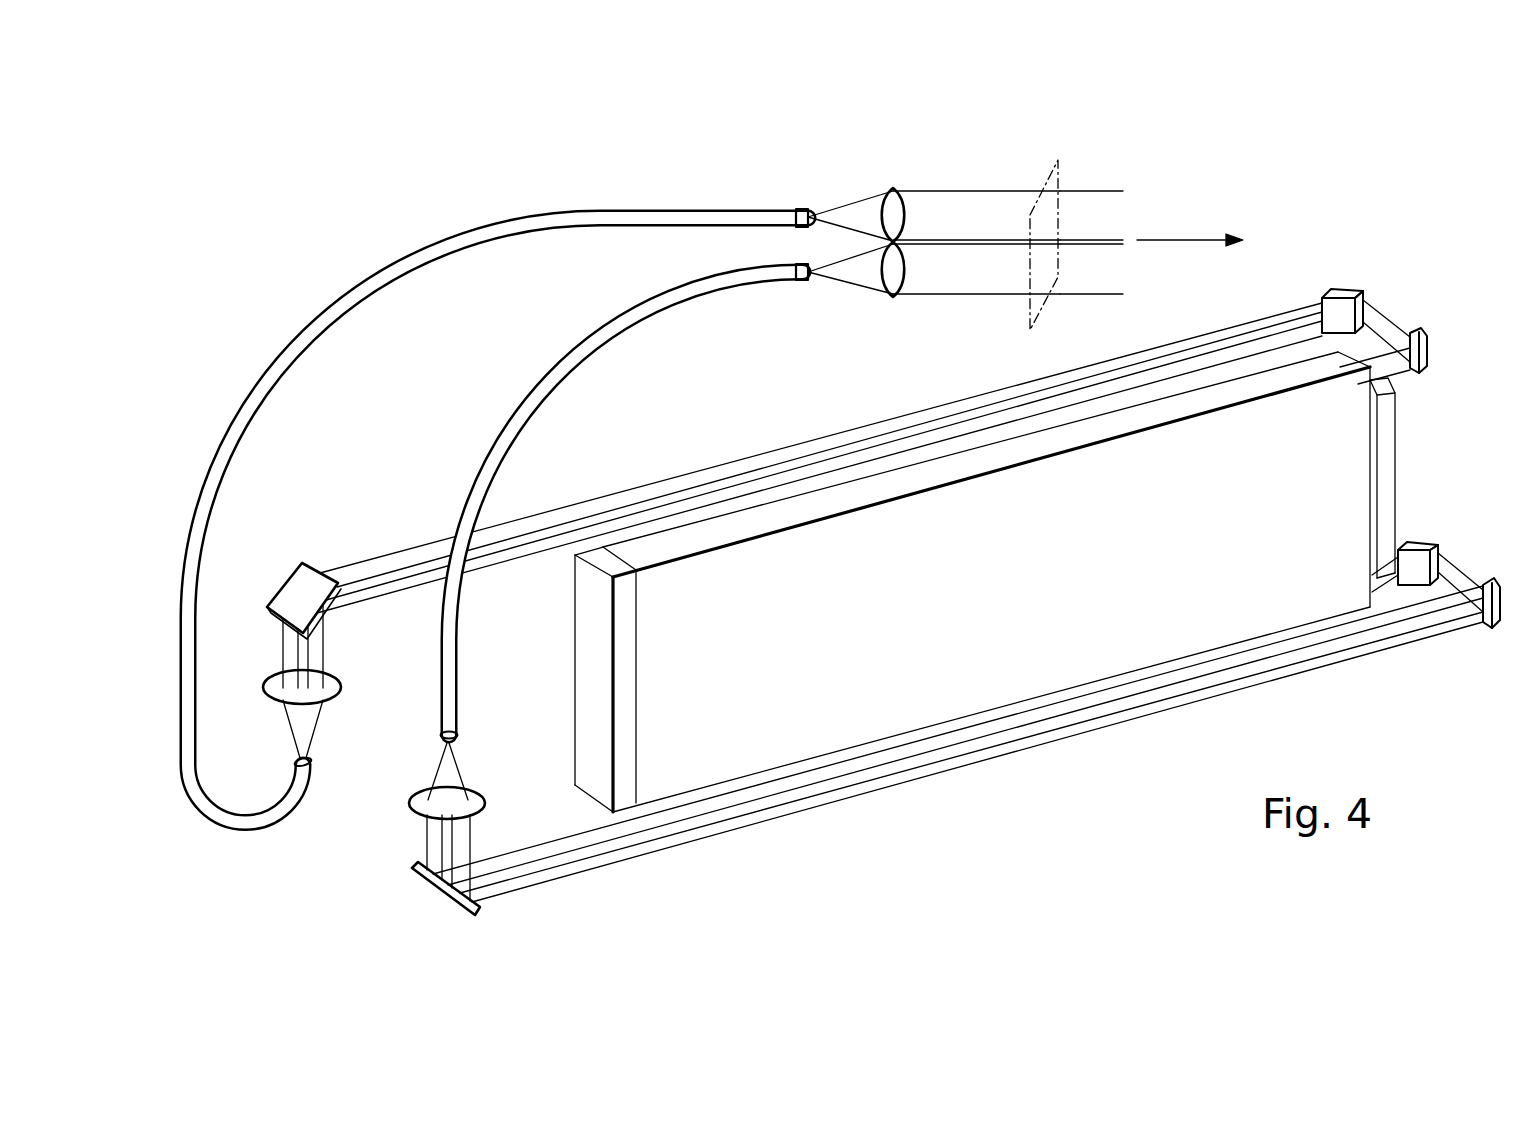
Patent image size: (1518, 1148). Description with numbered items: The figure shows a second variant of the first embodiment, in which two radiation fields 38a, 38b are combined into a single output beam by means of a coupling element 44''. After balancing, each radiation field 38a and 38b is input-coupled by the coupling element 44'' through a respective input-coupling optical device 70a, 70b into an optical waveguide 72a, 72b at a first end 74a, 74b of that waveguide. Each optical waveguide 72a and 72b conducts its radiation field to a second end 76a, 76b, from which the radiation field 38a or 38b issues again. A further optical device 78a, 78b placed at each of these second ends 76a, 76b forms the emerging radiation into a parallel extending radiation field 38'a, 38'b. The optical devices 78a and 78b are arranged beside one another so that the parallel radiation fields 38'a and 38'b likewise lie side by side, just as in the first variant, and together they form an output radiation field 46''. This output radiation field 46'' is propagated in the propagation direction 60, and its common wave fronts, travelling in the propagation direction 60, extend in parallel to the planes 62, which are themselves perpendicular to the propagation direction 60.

The coupling element 44'' is at (498, 546).
The second end of optical waveguide 76b is at (797, 211).
The second end of optical waveguide 76a is at (797, 278).
The radiation field 38b is at (853, 217).
The radiation field 38a is at (856, 274).
The further optical device 78b is at (894, 199).
The further optical device 78a is at (898, 278).
The parallel extending radiation field 38'b is at (976, 189).
The parallel extending radiation field 38'a is at (976, 295).
The output radiation field 46'' is at (1114, 216).
The planes 62 is at (1045, 308).
The propagation direction 60 is at (1207, 238).
The optical waveguide 72b is at (218, 812).
The optical waveguide 72a is at (450, 610).
The end of optical waveguide 74b is at (312, 771).
The end of optical waveguide 74a is at (452, 722).
The input-coupling optical device 70b is at (338, 683).
The input-coupling optical device 70a is at (477, 803).